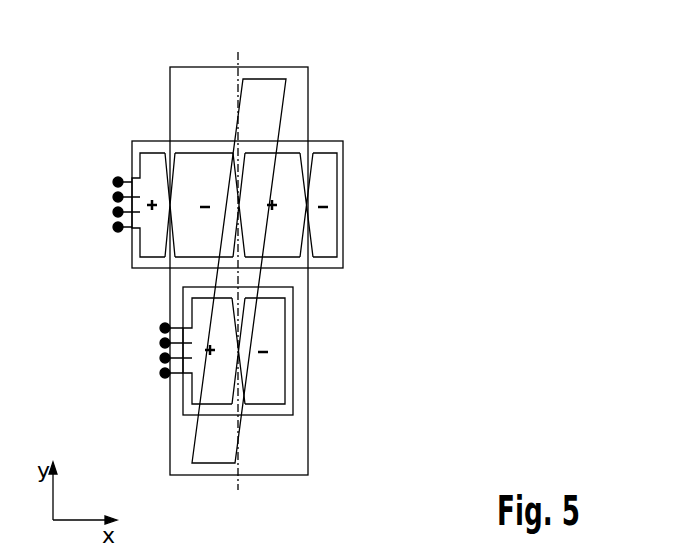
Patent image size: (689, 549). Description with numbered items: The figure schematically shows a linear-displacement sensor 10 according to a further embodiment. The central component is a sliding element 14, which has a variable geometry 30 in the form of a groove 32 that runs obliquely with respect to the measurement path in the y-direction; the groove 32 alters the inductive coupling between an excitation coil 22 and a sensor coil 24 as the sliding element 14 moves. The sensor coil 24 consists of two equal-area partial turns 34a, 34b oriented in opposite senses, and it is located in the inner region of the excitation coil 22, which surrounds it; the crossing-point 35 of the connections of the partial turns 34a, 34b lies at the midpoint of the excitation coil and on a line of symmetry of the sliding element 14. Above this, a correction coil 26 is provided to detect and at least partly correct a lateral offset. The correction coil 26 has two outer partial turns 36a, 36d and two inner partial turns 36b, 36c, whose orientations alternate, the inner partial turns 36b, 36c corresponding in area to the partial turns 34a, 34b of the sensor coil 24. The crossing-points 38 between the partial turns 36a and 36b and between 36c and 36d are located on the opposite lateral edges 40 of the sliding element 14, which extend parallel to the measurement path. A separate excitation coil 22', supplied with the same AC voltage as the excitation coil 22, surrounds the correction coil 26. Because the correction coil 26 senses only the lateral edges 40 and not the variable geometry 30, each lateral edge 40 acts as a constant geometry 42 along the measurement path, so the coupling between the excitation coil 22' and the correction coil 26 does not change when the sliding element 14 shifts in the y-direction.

The linear-displacement sensor 10 is at (285, 239).
The sliding element 14 is at (197, 78).
The excitation coil 22 is at (268, 351).
The separate excitation coil 22' is at (267, 204).
The sensor coil 24 is at (224, 408).
The correction coil 26 is at (239, 221).
The variable geometry 30 is at (255, 92).
The groove 32 is at (272, 82).
The partial turn 34a is at (210, 388).
The partial turn 34b is at (264, 395).
The crossing-point 35 is at (238, 350).
The outer partial turn 36a is at (153, 164).
The inner partial turn 36b is at (182, 162).
The inner partial turn 36c is at (292, 160).
The outer partial turn 36d is at (327, 167).
The crossing-point 38 is at (308, 205).
The lateral edge 40 is at (170, 120).
The constant geometry 42 is at (357, 90).